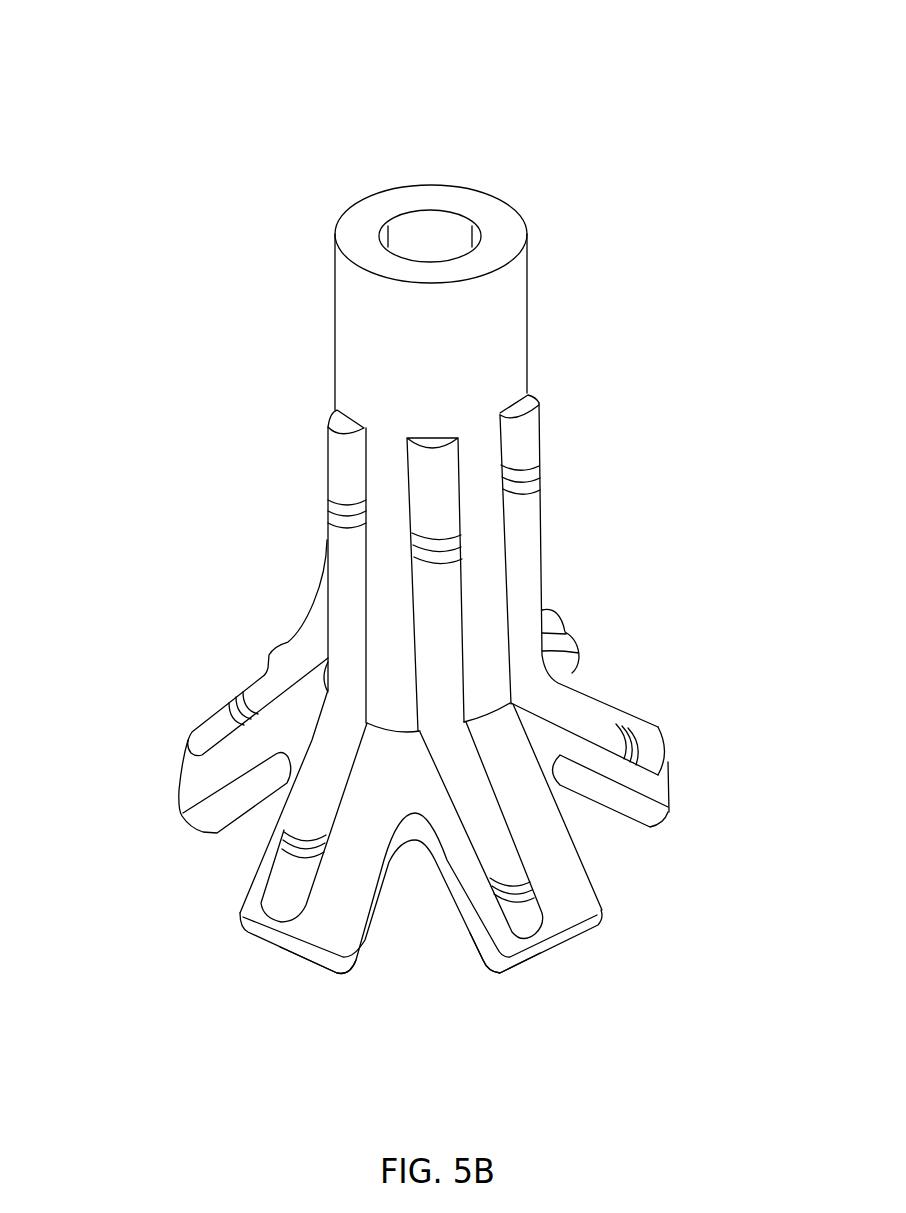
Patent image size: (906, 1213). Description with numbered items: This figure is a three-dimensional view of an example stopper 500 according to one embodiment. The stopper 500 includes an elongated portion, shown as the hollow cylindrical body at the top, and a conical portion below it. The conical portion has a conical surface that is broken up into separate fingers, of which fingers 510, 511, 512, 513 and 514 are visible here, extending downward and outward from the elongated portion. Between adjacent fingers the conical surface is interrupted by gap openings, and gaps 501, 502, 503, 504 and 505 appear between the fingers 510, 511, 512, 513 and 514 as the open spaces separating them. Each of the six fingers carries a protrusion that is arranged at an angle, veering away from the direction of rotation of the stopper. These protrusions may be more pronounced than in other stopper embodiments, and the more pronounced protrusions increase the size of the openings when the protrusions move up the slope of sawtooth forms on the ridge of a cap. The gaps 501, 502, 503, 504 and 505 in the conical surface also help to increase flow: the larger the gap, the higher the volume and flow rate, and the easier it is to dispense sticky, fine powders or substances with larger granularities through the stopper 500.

The stopper 500 is at (152, 44).
The gap 501 is at (652, 685).
The gap 502 is at (636, 854).
The gap 503 is at (451, 959).
The gap 504 is at (246, 874).
The gap 505 is at (251, 672).
The finger 510 is at (580, 644).
The finger 511 is at (672, 808).
The finger 512 is at (552, 960).
The finger 513 is at (307, 968).
The finger 514 is at (181, 816).